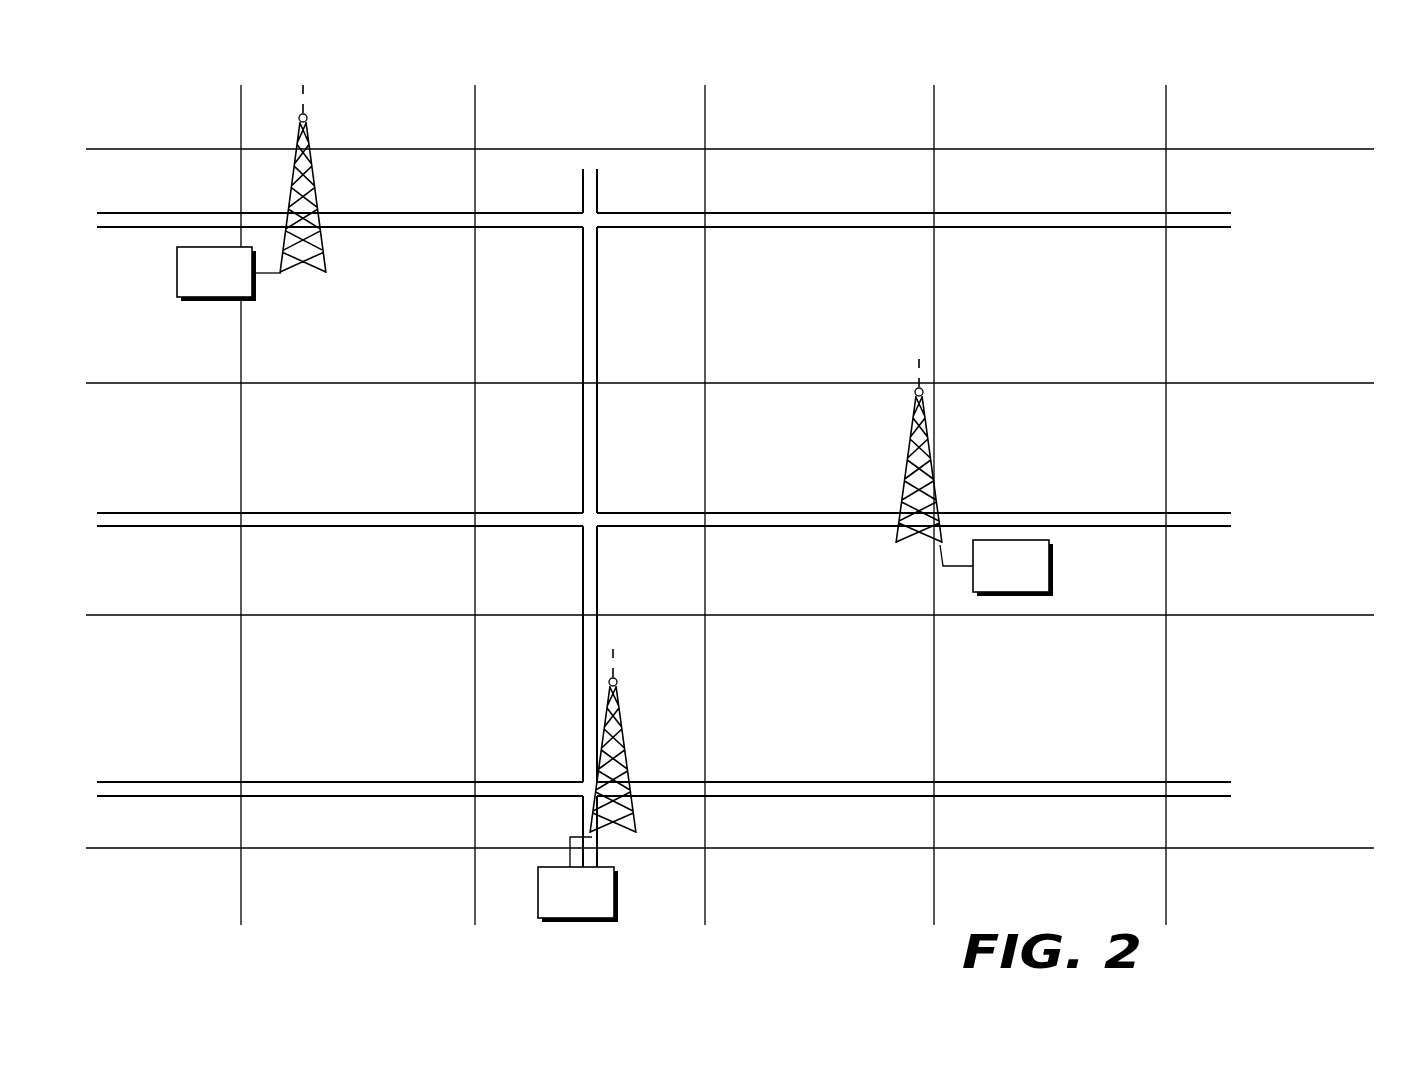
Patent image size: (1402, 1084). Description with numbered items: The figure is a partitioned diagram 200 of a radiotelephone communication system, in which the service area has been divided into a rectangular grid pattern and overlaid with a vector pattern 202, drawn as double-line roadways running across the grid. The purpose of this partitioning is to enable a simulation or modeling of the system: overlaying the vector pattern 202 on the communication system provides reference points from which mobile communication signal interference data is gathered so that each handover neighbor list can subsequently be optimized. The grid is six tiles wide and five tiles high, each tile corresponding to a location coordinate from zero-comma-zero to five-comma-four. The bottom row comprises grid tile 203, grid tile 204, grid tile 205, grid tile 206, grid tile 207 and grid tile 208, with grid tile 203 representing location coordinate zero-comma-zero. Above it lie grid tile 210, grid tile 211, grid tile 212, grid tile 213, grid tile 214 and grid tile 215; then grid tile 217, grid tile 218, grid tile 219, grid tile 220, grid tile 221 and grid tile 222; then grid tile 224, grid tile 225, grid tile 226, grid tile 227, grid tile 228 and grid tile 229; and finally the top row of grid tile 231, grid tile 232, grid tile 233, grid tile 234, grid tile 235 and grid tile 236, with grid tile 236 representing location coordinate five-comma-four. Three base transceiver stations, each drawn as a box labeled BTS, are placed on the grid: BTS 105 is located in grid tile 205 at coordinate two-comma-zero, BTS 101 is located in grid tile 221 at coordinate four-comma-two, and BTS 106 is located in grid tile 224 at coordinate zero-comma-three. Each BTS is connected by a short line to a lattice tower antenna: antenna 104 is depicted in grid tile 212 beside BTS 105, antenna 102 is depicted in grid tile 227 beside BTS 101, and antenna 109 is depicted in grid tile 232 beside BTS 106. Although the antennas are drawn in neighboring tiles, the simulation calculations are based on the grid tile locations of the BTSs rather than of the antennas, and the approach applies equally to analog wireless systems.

The BTS 101 is at (1053, 557).
The antenna 102 is at (921, 363).
The antenna 104 is at (614, 671).
The BTS 105 is at (538, 893).
The BTS 106 is at (176, 273).
The antenna 109 is at (305, 108).
The partitioned diagram 200 is at (739, 526).
The vector pattern 202 is at (956, 207).
The grid tile 203 is at (184, 878).
The grid tile 204 is at (419, 878).
The grid tile 205 is at (650, 878).
The grid tile 206 is at (879, 878).
The grid tile 207 is at (1109, 878).
The grid tile 208 is at (1289, 878).
The grid tile 210 is at (184, 838).
The grid tile 211 is at (419, 838).
The grid tile 212 is at (650, 838).
The grid tile 213 is at (879, 838).
The grid tile 214 is at (1109, 838).
The grid tile 215 is at (1289, 838).
The grid tile 217 is at (186, 606).
The grid tile 218 is at (419, 606).
The grid tile 219 is at (650, 606).
The grid tile 220 is at (879, 606).
The grid tile 221 is at (1111, 606).
The grid tile 222 is at (1290, 606).
The grid tile 224 is at (186, 373).
The grid tile 225 is at (419, 373).
The grid tile 226 is at (650, 373).
The grid tile 227 is at (866, 373).
The grid tile 228 is at (1111, 373).
The grid tile 229 is at (1290, 373).
The grid tile 231 is at (186, 141).
The grid tile 232 is at (420, 141).
The grid tile 233 is at (650, 141).
The grid tile 234 is at (880, 141).
The grid tile 235 is at (1110, 141).
The grid tile 236 is at (1290, 141).